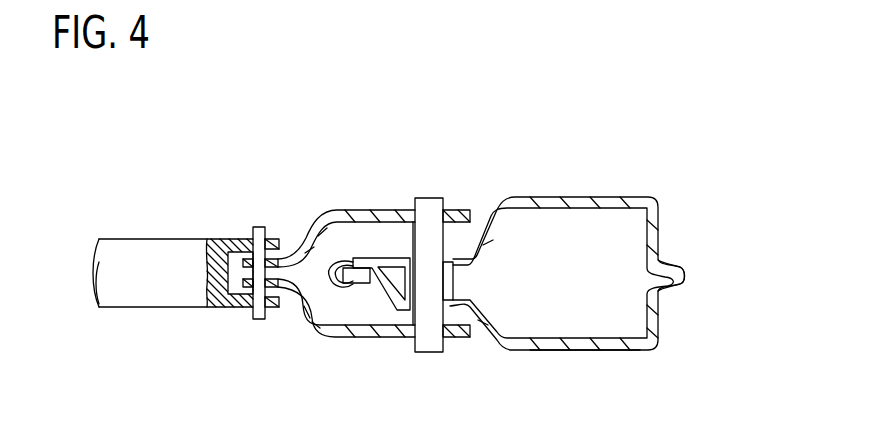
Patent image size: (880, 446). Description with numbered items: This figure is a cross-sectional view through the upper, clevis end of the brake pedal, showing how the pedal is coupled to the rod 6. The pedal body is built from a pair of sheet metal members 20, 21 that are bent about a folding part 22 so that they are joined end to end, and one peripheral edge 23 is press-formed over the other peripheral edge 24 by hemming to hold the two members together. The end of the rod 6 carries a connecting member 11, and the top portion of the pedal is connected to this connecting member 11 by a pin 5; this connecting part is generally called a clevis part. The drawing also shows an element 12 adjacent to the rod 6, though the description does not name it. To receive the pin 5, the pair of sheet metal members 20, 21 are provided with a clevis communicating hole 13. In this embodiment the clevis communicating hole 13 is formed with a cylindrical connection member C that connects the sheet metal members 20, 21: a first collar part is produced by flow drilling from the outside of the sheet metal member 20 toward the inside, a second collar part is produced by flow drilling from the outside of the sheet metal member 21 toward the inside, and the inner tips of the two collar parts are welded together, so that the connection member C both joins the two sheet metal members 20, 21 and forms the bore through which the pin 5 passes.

The pin 5 is at (425, 340).
The rod 6 is at (143, 287).
The connecting member 11 is at (355, 337).
The mounting plate 12 is at (254, 319).
The clevis communicating hole 13 is at (442, 270).
The sheet metal member 20 is at (560, 197).
The sheet metal member 21 is at (561, 348).
The folding part 22 is at (688, 277).
The peripheral edge 23 is at (355, 283).
The peripheral edge 24 is at (350, 270).
The cylindrical connection member C is at (395, 277).